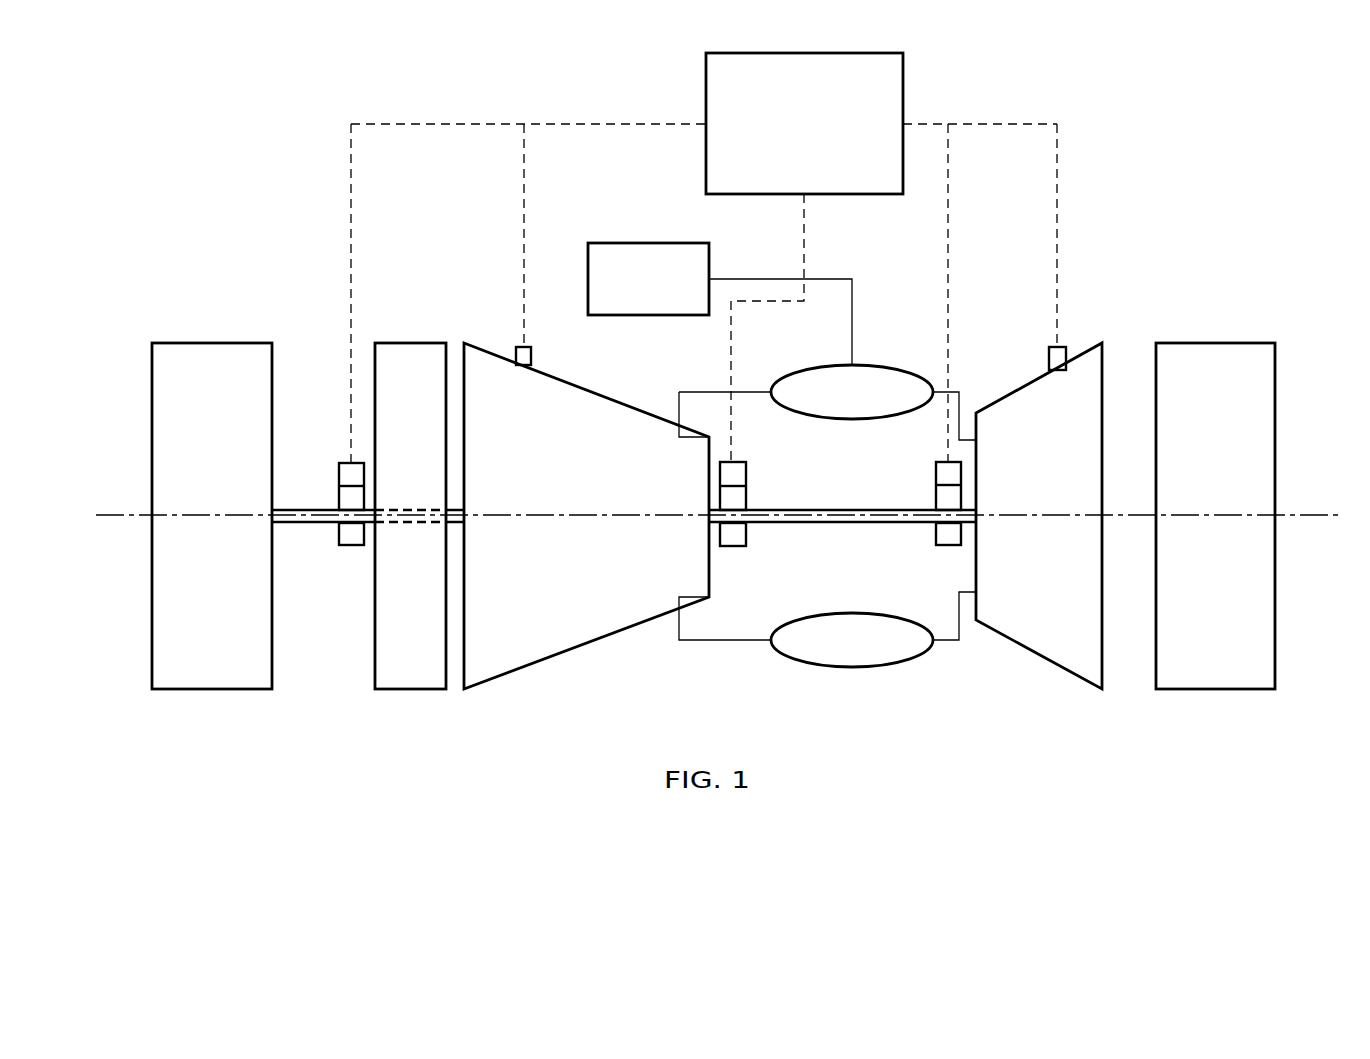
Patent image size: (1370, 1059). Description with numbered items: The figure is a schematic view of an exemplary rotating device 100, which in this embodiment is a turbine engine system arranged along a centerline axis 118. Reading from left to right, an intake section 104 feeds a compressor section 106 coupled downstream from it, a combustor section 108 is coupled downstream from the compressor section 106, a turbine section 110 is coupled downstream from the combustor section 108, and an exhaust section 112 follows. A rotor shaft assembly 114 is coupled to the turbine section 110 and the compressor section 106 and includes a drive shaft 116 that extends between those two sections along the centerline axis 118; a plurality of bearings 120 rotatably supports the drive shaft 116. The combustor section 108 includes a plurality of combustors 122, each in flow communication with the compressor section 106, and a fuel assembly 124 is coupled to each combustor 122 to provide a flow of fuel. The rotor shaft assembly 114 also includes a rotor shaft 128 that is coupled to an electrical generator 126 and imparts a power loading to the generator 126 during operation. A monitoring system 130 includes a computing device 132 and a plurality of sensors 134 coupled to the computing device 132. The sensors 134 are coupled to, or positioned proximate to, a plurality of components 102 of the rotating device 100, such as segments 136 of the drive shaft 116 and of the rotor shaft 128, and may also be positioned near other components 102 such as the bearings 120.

The rotating device 100 is at (312, 160).
The components 102 is at (339, 493).
The intake section 104 is at (412, 342).
The compressor section 106 is at (483, 342).
The combustor section 108 is at (877, 348).
The turbine section 110 is at (1094, 342).
The exhaust section 112 is at (1217, 342).
The rotor shaft assembly 114 is at (833, 480).
The drive shaft 116 is at (778, 509).
The centerline axis 118 is at (1127, 513).
The bearings 120 is at (350, 547).
The combustors 122 is at (827, 365).
The fuel assembly 124 is at (647, 242).
The electrical generator 126 is at (218, 343).
The rotor shaft 128 is at (294, 509).
The monitoring system 130 is at (622, 90).
The computing device 132 is at (806, 52).
The sensors 134 is at (345, 462).
The segments 136 is at (320, 525).